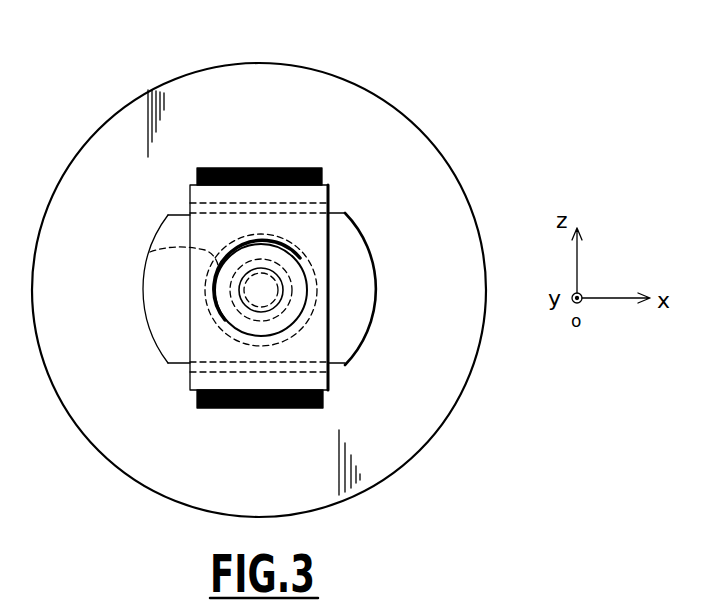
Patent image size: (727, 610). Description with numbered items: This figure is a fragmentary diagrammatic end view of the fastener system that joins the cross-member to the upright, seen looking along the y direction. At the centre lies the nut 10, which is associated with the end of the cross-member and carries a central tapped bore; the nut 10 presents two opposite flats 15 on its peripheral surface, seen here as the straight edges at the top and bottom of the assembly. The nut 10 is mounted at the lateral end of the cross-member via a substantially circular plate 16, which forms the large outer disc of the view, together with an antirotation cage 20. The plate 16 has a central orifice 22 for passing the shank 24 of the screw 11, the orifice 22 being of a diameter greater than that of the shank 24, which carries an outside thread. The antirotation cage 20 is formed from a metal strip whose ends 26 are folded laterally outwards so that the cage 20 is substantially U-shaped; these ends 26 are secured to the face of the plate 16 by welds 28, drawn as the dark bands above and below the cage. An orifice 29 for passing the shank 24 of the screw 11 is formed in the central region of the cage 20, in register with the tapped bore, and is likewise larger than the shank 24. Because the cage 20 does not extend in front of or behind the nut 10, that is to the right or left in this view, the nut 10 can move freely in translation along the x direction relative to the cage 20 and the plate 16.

The nut 10 is at (383, 273).
The screw 11 is at (286, 302).
The flats 15 is at (338, 213).
The plate 16 is at (353, 96).
The antirotation cage 20 is at (322, 252).
The central orifice 22 is at (150, 252).
The shank 24 is at (250, 289).
The ends 26 is at (189, 191).
The welds 28 is at (258, 167).
The orifice 29 is at (243, 314).